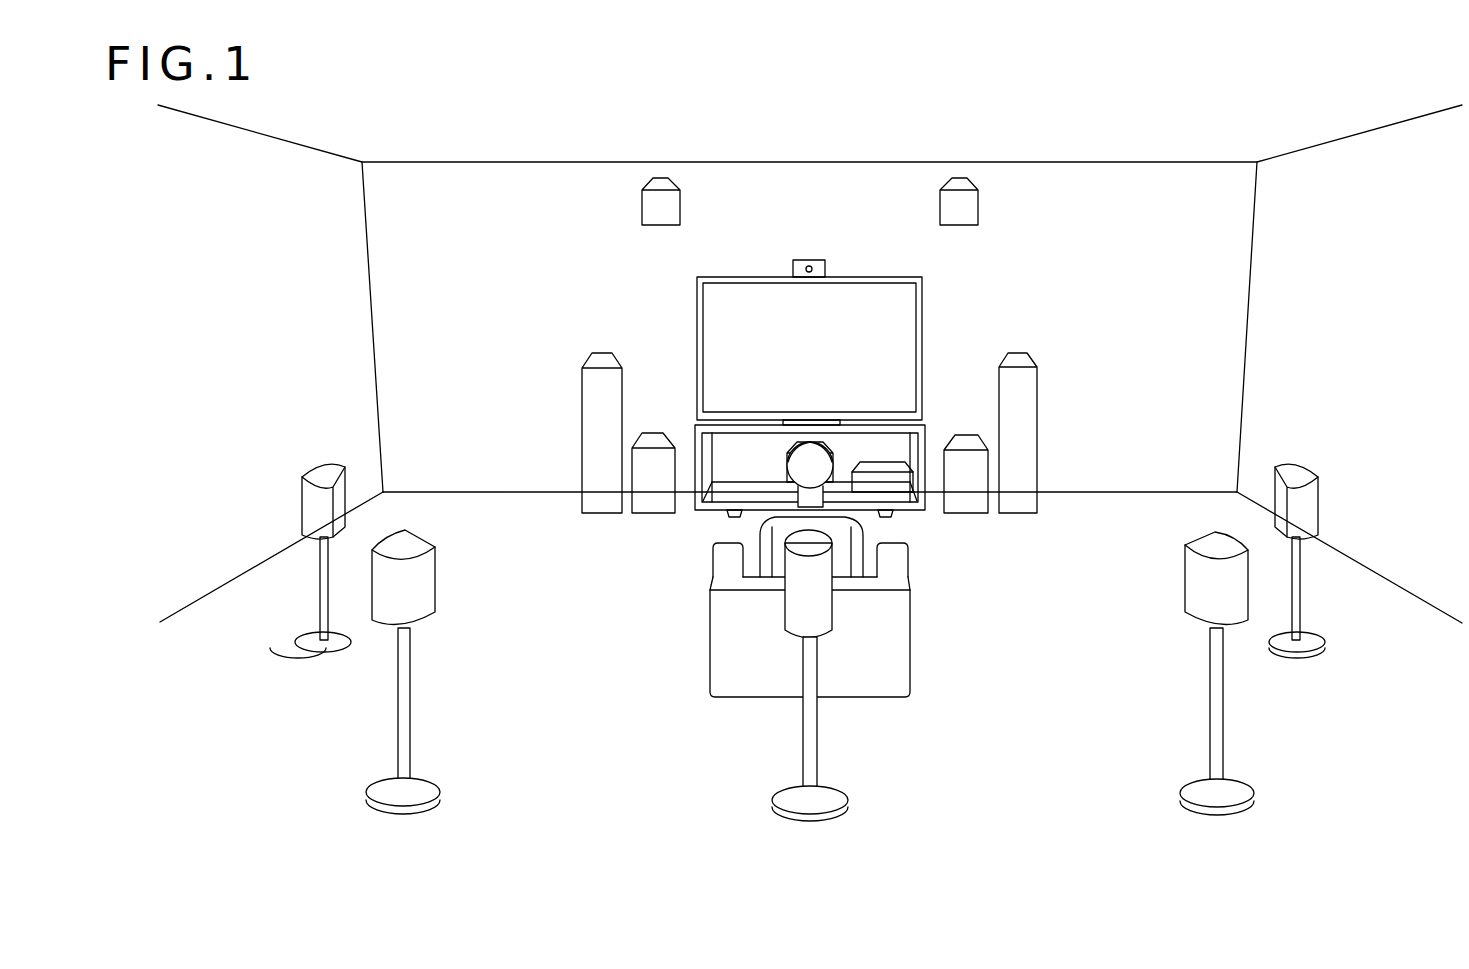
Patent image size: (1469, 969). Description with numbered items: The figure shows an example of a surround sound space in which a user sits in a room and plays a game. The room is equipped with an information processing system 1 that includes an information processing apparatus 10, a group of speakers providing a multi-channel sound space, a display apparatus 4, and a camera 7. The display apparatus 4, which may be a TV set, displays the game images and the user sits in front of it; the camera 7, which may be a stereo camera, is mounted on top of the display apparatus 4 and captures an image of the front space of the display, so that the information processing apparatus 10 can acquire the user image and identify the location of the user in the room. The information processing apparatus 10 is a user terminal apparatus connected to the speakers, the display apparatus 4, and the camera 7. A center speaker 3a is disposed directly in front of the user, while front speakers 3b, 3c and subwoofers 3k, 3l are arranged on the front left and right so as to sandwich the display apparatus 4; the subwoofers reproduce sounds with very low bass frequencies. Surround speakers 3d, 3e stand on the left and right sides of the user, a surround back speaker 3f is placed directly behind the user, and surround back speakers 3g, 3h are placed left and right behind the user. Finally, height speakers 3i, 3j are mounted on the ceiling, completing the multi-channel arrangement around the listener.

The information processing system 1 is at (818, 902).
The center speaker 3a is at (797, 443).
The front speaker 3b is at (600, 355).
The front speaker 3c is at (1018, 355).
The surround speaker 3d is at (320, 470).
The surround speaker 3e is at (1298, 470).
The surround back speaker 3f is at (825, 612).
The surround back speaker 3g is at (408, 535).
The surround back speaker 3h is at (1212, 535).
The height speaker 3i is at (660, 183).
The height speaker 3j is at (960, 183).
The subwoofer 3k is at (652, 435).
The subwoofer 3l is at (965, 437).
The display apparatus 4 is at (870, 278).
The camera 7 is at (810, 262).
The information processing apparatus 10 is at (905, 485).